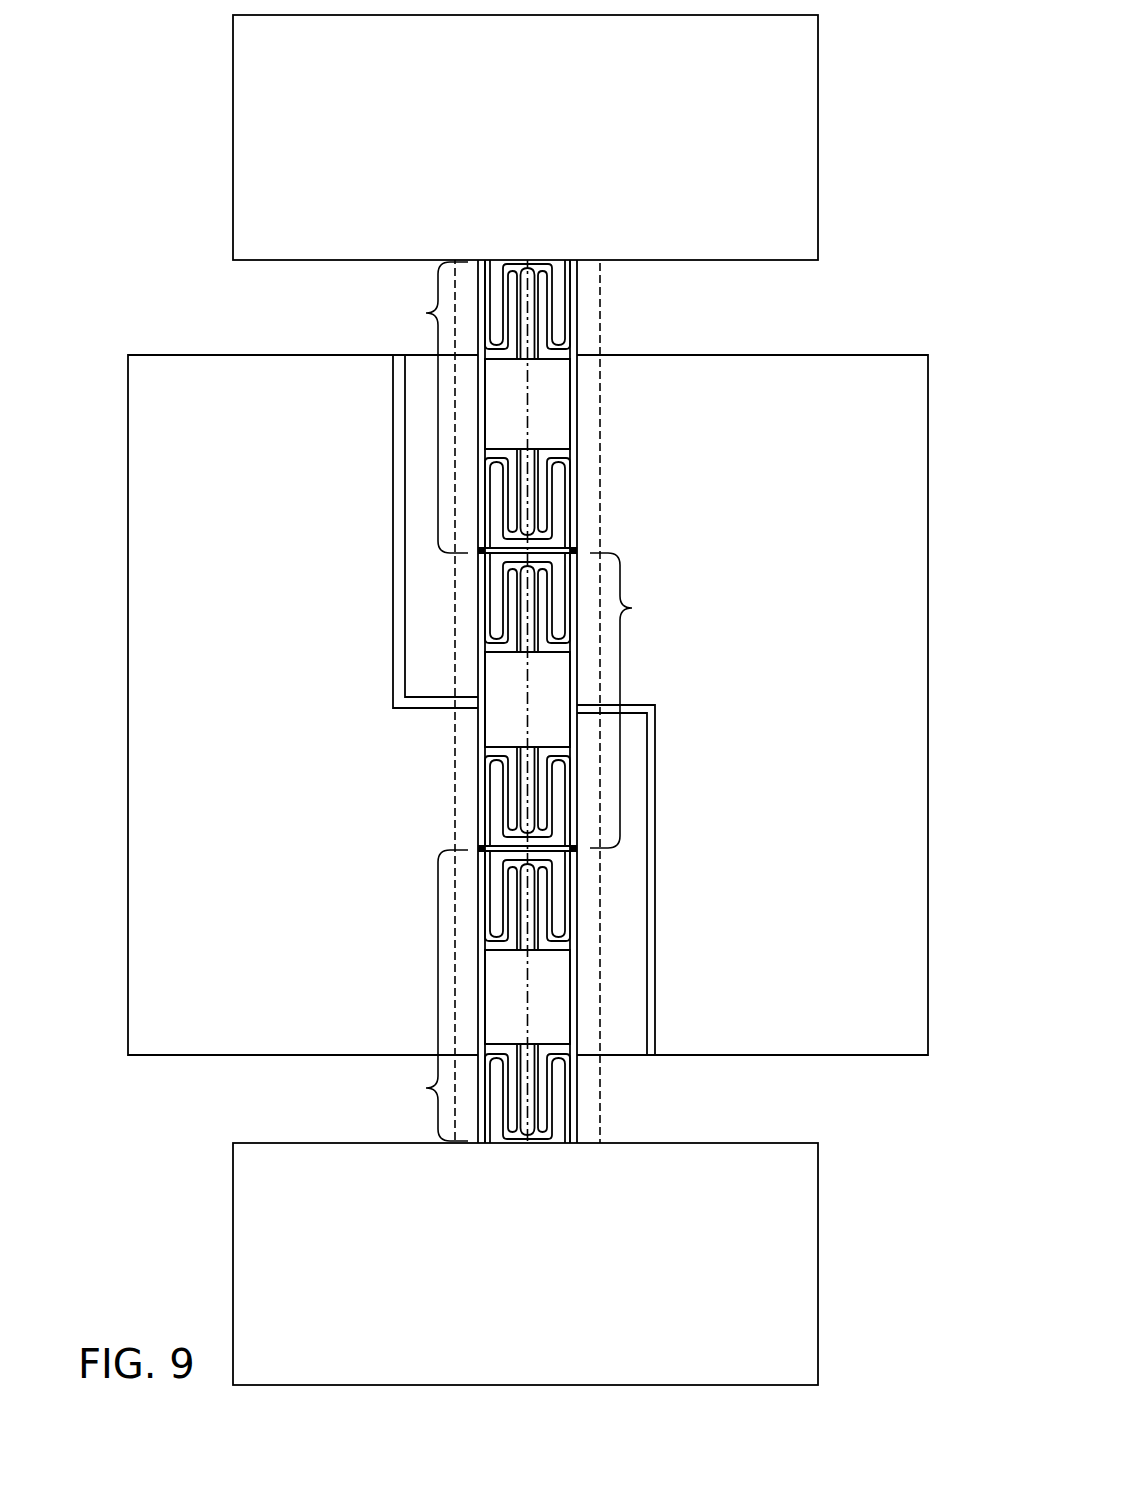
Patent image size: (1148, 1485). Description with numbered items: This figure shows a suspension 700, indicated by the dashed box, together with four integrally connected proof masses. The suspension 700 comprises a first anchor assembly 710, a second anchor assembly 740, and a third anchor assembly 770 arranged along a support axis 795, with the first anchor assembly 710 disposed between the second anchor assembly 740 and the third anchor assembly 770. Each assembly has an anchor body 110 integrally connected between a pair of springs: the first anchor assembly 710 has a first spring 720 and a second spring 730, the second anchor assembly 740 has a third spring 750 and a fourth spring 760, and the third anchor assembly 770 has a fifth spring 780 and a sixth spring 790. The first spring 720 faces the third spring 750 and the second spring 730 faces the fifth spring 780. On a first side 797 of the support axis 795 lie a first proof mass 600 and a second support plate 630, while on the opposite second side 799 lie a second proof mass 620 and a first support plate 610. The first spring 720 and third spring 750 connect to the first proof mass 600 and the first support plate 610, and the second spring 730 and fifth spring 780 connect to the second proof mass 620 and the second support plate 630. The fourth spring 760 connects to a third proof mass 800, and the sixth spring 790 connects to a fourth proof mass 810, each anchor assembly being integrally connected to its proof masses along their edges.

The anchor body 110 is at (497, 415).
The first proof mass 600 is at (704, 544).
The first support plate 610 is at (420, 568).
The second proof mass 620 is at (263, 911).
The second support plate 630 is at (642, 965).
The suspension 700 is at (600, 293).
The first anchor assembly 710 is at (643, 700).
The first spring 720 is at (470, 633).
The second spring 730 is at (470, 803).
The second anchor assembly 740 is at (412, 407).
The third spring 750 is at (585, 480).
The fourth spring 760 is at (585, 325).
The third anchor assembly 770 is at (412, 995).
The fifth spring 780 is at (585, 890).
The sixth spring 790 is at (585, 1107).
The support axis 795 is at (526, 231).
The first side 797 is at (814, 314).
The second side 799 is at (208, 314).
The third proof mass 800 is at (572, 126).
The fourth proof mass 810 is at (578, 1306).